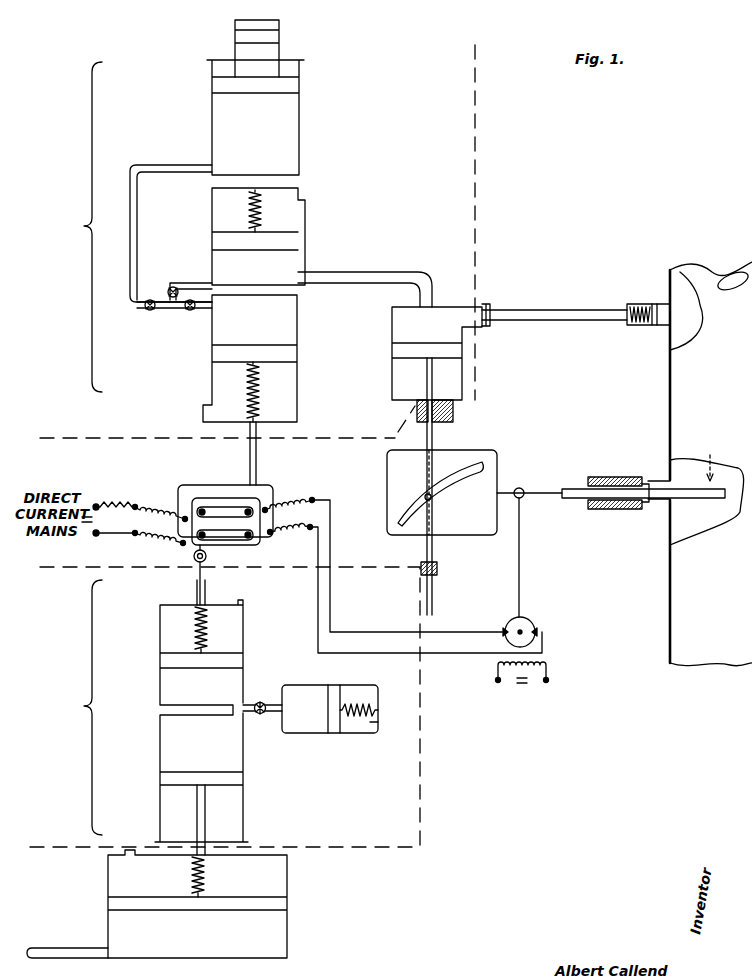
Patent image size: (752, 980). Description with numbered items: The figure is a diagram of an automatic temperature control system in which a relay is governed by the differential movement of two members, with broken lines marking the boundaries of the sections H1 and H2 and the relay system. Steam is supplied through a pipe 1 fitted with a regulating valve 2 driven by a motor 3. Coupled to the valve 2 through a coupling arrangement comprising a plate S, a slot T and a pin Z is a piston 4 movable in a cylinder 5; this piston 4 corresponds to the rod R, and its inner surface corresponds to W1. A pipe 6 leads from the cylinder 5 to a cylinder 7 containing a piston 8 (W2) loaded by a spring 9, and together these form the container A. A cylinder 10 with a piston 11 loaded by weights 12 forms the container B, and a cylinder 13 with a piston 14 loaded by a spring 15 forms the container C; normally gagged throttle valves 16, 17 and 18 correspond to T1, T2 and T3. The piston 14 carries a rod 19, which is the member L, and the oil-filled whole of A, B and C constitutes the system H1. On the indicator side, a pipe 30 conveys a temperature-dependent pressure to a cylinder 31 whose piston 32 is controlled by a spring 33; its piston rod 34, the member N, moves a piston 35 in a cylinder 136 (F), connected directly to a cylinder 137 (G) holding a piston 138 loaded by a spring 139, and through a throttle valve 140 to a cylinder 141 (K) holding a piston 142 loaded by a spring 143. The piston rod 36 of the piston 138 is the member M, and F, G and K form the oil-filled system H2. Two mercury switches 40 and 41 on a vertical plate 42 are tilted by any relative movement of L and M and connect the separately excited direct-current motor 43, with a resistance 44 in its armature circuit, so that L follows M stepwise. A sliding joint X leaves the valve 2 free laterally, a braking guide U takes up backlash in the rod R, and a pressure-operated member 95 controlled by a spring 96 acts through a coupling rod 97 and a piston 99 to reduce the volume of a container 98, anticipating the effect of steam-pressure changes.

The pipe 1 is at (676, 405).
The regulating valve 2 is at (706, 500).
The motor 3 is at (547, 665).
The piston 4 is at (418, 330).
The cylinder 5 is at (462, 372).
The pipe 6 is at (427, 282).
The cylinder 7 is at (298, 222).
The piston 8 is at (250, 252).
The spring 9 is at (262, 212).
The cylinder 10 is at (299, 115).
The piston 11 is at (244, 93).
The weights 12 is at (280, 30).
The cylinder 13 is at (299, 313).
The piston 14 is at (298, 352).
The spring 15 is at (258, 400).
The throttle valve 16 is at (148, 310).
The throttle valve 17 is at (170, 287).
The throttle valve 18 is at (189, 310).
The rod 19 is at (257, 430).
The pipe 30 is at (62, 947).
The cylinder 31 is at (287, 938).
The piston 32 is at (225, 910).
The spring 33 is at (205, 880).
The piston rod 34 is at (206, 828).
The piston 35 is at (160, 780).
The piston rod 36 is at (206, 590).
The mercury switch 40 is at (208, 507).
The mercury switch 41 is at (232, 530).
The vertical plate 42 is at (262, 545).
The D. C. motor 43 is at (507, 638).
The resistance 44 is at (118, 503).
The member 95 is at (652, 304).
The spring 96 is at (630, 305).
The coupling rod 97 is at (570, 320).
The container 98 is at (500, 312).
The piston 99 is at (490, 306).
The cylinder 136 is at (160, 750).
The cylinder 137 is at (244, 680).
The piston 138 is at (235, 660).
The spring 139 is at (215, 630).
The throttle valve 140 is at (262, 715).
The cylinder 141 is at (310, 733).
The piston 142 is at (335, 733).
The spring 143 is at (378, 710).
The container A is at (415, 262).
The container B is at (327, 119).
The container C is at (311, 325).
The cylinder F is at (160, 722).
The cylinder G is at (256, 689).
The system H1 is at (78, 227).
The system H2 is at (73, 707).
The cylinder K is at (320, 685).
The member L is at (257, 462).
The member M is at (207, 556).
The member N is at (214, 805).
The rod R is at (426, 381).
The plate S is at (480, 537).
The slot T is at (468, 470).
The throttle valve T1 is at (151, 310).
The throttle valve T2 is at (174, 287).
The throttle valve T3 is at (192, 312).
The braking guide U is at (459, 433).
The inner surface of piston W1 is at (409, 326).
The piston W2 is at (268, 270).
The sliding joint X is at (646, 510).
The pin Z is at (432, 497).